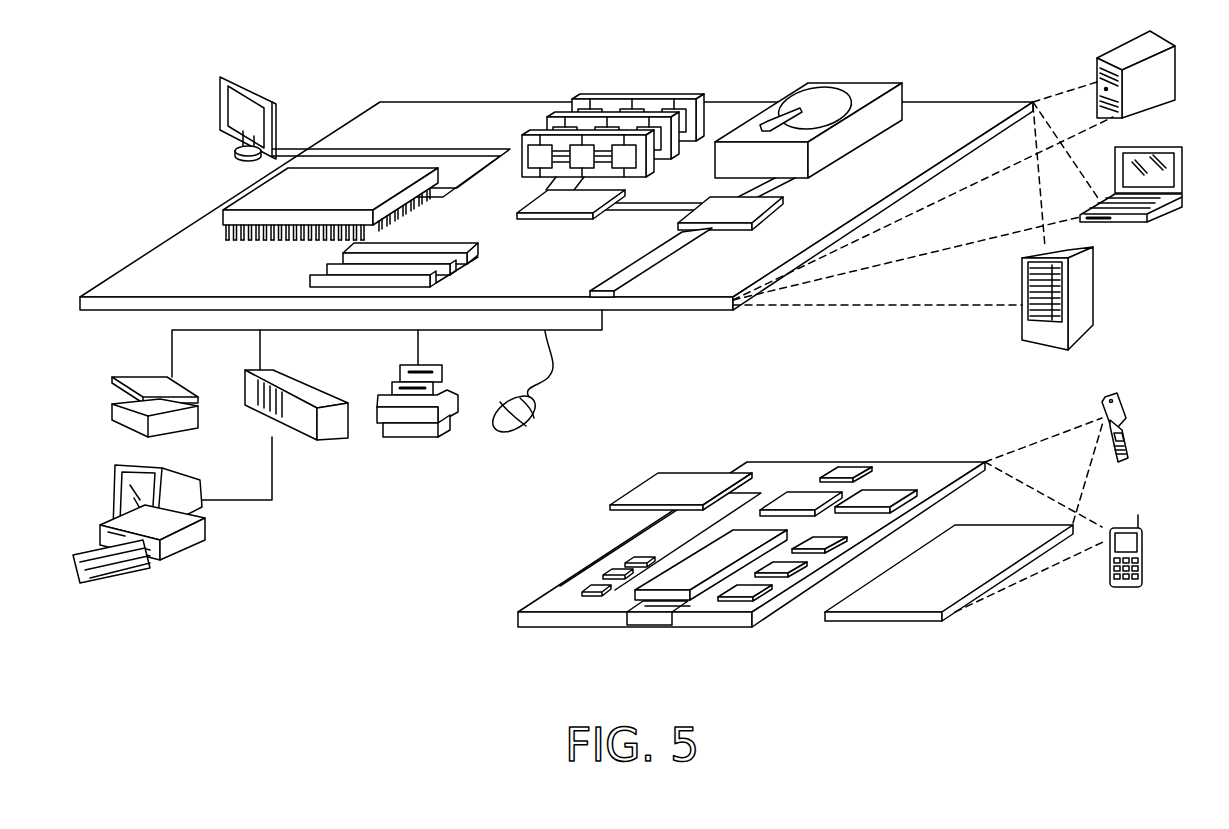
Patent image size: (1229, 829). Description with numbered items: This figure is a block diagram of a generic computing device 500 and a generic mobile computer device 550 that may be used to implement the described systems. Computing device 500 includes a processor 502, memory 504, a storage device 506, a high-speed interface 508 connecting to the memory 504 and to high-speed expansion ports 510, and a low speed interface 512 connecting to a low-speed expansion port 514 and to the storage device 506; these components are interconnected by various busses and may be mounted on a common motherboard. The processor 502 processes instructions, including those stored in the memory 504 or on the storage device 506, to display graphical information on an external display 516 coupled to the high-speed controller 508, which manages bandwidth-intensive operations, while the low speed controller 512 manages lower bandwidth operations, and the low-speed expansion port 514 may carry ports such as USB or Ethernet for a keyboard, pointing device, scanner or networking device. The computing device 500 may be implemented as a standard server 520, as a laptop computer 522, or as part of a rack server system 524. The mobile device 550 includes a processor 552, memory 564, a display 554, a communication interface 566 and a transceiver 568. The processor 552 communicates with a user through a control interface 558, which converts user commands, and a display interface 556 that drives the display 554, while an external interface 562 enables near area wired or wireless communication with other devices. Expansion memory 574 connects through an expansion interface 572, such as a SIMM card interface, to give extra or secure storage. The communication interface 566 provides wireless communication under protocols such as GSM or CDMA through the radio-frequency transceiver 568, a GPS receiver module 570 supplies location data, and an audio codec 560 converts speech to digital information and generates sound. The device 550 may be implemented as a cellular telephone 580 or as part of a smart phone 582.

The computing device 500 is at (334, 52).
The processor 502 is at (246, 192).
The memory 504 is at (640, 98).
The storage device 506 is at (847, 82).
The high-speed interface 508 is at (582, 200).
The high-speed expansion ports 510 is at (334, 259).
The low speed interface 512 is at (708, 200).
The low-speed expansion port 514 is at (608, 282).
The display 516 is at (223, 73).
The standard server 520 is at (1115, 56).
The laptop computer 522 is at (1162, 147).
The rack server system 524 is at (1096, 296).
The mobile computer device 550 is at (474, 640).
The processor 552 is at (683, 571).
The display 554 is at (983, 540).
The display interface 556 is at (760, 597).
The control interface 558 is at (795, 566).
The audio codec 560 is at (822, 540).
The external interface 562 is at (650, 614).
The memory 564 is at (606, 577).
The communication interface 566 is at (800, 491).
The transceiver 568 is at (882, 491).
The GPS receiver module 570 is at (847, 470).
The expansion interface 572 is at (738, 471).
The expansion memory 574 is at (661, 471).
The cellular telephone 580 is at (1111, 395).
The smart phone 582 is at (1121, 516).